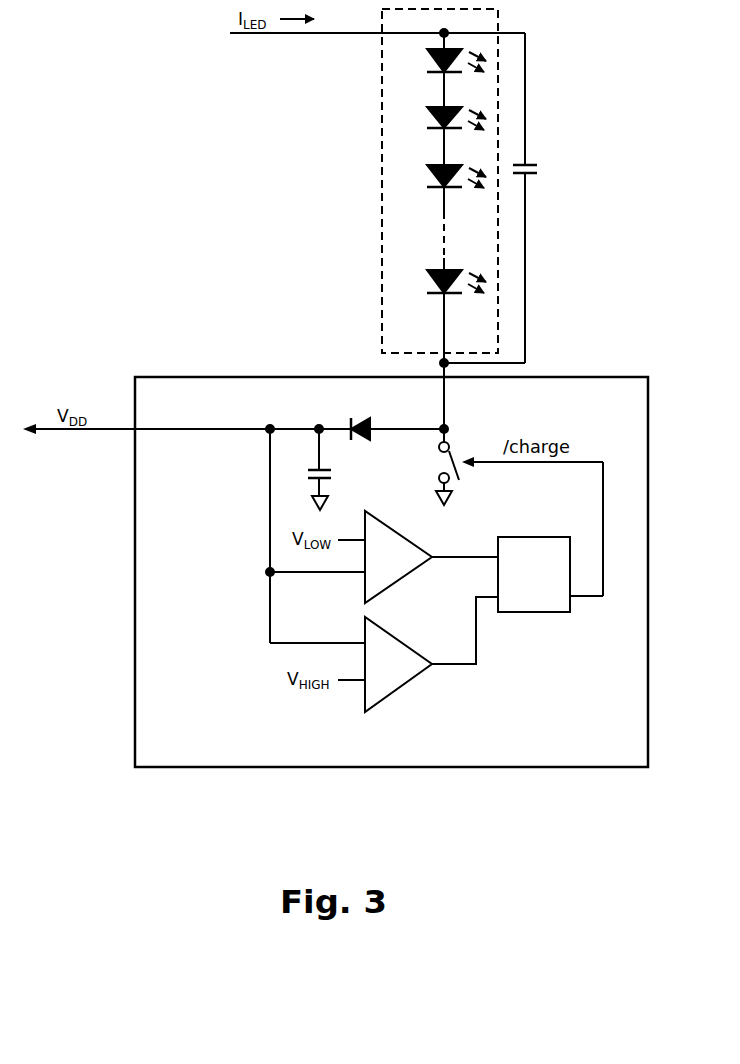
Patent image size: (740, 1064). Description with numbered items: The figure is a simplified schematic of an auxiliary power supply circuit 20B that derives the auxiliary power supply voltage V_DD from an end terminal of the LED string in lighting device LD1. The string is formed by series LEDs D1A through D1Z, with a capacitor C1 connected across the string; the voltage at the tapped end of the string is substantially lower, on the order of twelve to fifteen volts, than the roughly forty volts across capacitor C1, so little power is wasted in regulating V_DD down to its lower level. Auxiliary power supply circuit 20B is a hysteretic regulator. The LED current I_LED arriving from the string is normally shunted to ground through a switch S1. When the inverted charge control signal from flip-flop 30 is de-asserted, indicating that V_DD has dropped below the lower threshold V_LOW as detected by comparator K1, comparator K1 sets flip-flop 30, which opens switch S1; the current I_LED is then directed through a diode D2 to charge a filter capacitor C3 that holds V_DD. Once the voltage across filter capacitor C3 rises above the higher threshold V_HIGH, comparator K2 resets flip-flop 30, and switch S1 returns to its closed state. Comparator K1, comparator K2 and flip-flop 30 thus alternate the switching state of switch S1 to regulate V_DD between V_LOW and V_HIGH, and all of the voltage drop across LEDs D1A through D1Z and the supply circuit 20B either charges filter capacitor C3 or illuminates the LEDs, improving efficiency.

The lighting device LD1 is at (441, 219).
The LED D1A is at (442, 65).
The LED D1Z is at (464, 249).
The capacitor C1 is at (505, 198).
The auxiliary power supply circuit 20B is at (391, 572).
The diode D2 is at (363, 417).
The filter capacitor C3 is at (305, 469).
The switch S1 is at (432, 467).
The comparator K1 is at (393, 529).
The comparator K2 is at (393, 633).
The flip-flop 30 is at (522, 537).